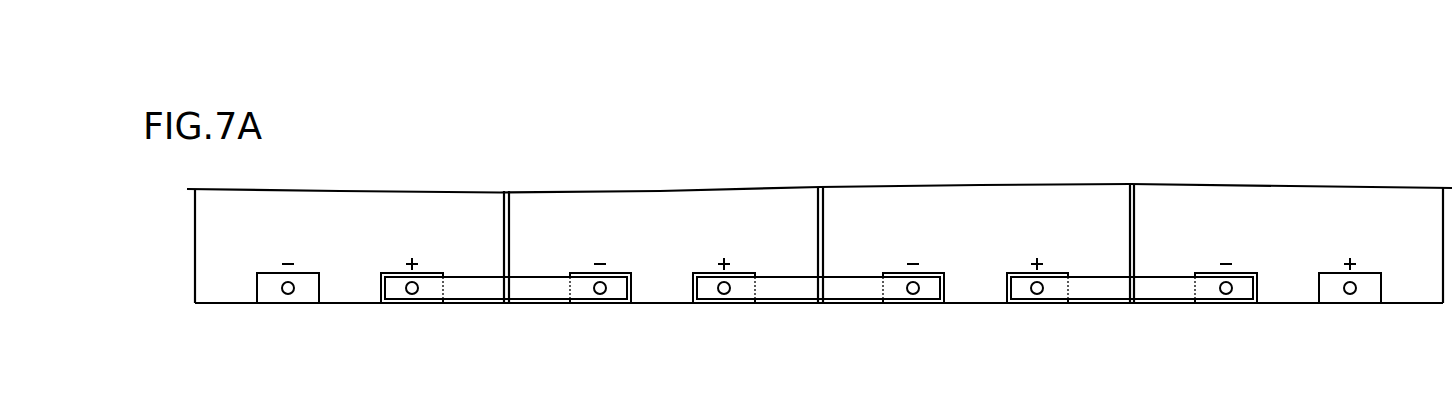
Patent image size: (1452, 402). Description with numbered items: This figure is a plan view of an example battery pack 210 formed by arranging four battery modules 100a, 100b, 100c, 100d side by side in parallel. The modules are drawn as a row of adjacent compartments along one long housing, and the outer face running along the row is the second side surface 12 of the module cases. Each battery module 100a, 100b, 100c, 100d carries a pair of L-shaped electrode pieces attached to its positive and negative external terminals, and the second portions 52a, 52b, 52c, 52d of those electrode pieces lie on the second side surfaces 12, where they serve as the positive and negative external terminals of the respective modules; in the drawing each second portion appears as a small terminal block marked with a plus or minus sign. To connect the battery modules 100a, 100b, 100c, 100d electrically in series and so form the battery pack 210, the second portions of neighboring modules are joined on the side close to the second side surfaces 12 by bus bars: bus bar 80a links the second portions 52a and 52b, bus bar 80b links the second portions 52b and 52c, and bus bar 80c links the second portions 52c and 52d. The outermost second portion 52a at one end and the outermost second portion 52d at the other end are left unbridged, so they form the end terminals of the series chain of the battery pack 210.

The second side surface 12 is at (1412, 205).
The battery pack 210 is at (1193, 98).
The battery module 100a is at (348, 203).
The battery module 100b is at (663, 207).
The battery module 100c is at (972, 205).
The battery module 100d is at (1263, 202).
The bus bar 80a is at (538, 283).
The bus bar 80b is at (853, 283).
The bus bar 80c is at (1162, 283).
The second portion 52a is at (299, 295).
The second portion 52b is at (612, 295).
The second portion 52c is at (926, 295).
The second portion 52d is at (1238, 295).